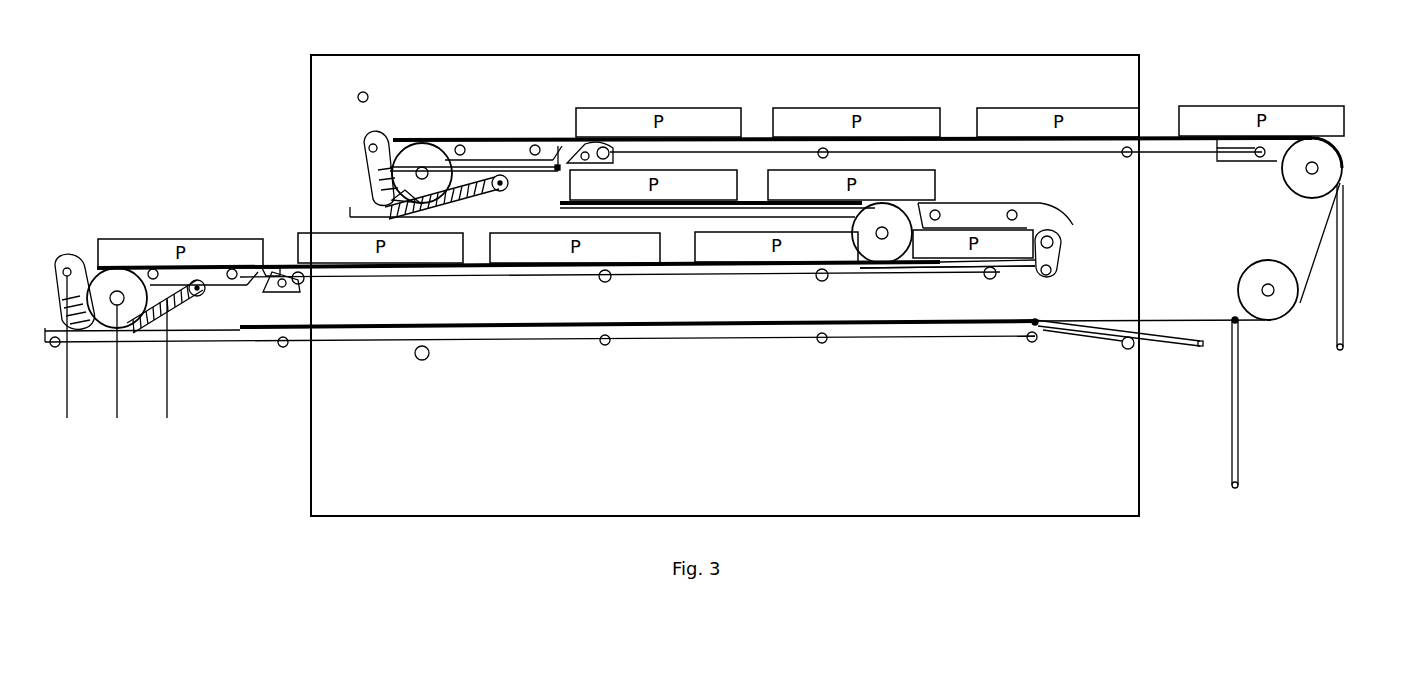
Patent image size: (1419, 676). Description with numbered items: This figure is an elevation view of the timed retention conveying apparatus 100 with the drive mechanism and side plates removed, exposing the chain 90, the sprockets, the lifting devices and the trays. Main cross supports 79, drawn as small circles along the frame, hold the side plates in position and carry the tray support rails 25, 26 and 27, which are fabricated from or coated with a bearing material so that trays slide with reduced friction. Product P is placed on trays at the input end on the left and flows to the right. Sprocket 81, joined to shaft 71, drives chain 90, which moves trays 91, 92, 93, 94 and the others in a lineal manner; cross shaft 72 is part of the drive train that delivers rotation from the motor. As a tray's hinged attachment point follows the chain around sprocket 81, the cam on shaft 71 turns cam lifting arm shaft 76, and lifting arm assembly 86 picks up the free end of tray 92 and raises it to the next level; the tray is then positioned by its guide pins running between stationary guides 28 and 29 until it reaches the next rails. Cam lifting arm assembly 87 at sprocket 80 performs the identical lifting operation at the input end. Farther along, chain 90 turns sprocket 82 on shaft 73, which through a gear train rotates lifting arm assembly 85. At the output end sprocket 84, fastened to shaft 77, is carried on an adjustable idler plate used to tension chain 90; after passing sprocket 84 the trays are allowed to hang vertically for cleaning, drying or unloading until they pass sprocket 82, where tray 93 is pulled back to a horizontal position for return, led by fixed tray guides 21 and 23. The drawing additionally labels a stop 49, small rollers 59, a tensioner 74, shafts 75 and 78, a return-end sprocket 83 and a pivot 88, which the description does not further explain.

The conveyor apparatus 100 is at (310, 115).
The main cross support 79 is at (369, 93).
The roller 59 is at (458, 146).
The stationary guide 28 is at (500, 153).
The stationary guide 29 is at (576, 150).
The cam lifting arm shaft 76 is at (364, 147).
The sprocket 81 is at (422, 173).
The shaft 71 is at (418, 176).
The tray 92 is at (537, 173).
The lifting arm assembly 86 is at (467, 200).
The sprocket 80 is at (117, 298).
The stop 49 is at (268, 267).
The tensioner 74 is at (75, 346).
The roller shaft 75 is at (117, 371).
The cam lifting arm assembly 87 is at (166, 359).
The cross shaft 72 is at (415, 357).
The tray support rail 26 is at (733, 277).
The tray support rail 25 is at (828, 278).
The tray support rail 27 is at (742, 332).
The sprocket 82 is at (882, 233).
The tray guide 23 is at (995, 215).
The shaft 73 is at (886, 236).
The tray 94 is at (1003, 264).
The lifting arm assembly 85 is at (1057, 250).
The sprocket 84 is at (1312, 168).
The tray guide 21 is at (1268, 157).
The shaft 77 is at (1317, 171).
The chain 90 is at (1320, 240).
The roller 83 is at (1268, 290).
The roller shaft 78 is at (1272, 292).
The pivot 88 is at (1133, 348).
The tray 93 is at (1163, 341).
The tray 91 is at (1238, 487).